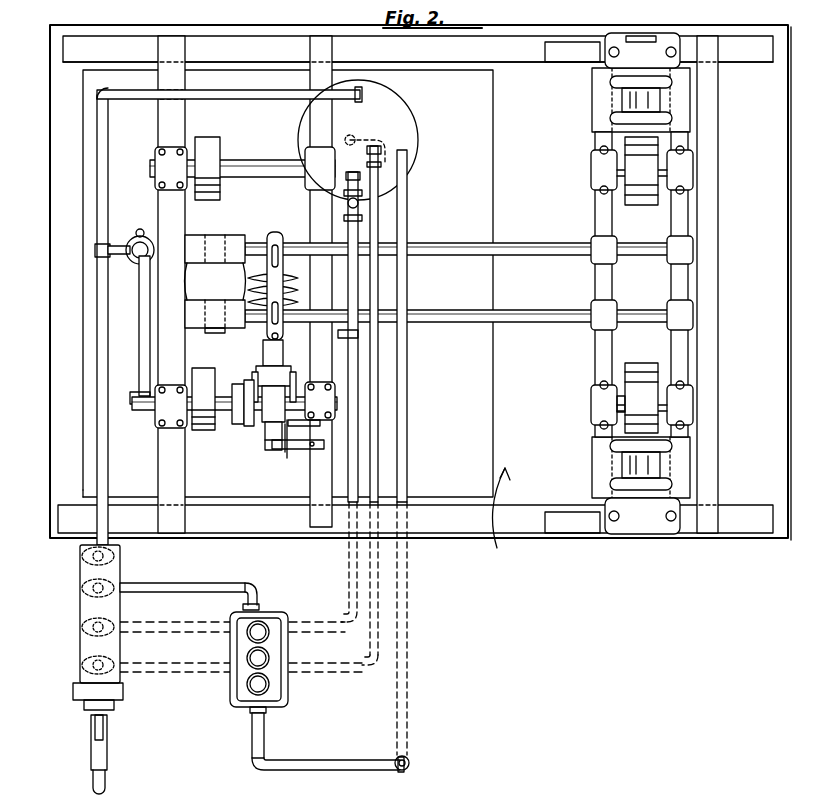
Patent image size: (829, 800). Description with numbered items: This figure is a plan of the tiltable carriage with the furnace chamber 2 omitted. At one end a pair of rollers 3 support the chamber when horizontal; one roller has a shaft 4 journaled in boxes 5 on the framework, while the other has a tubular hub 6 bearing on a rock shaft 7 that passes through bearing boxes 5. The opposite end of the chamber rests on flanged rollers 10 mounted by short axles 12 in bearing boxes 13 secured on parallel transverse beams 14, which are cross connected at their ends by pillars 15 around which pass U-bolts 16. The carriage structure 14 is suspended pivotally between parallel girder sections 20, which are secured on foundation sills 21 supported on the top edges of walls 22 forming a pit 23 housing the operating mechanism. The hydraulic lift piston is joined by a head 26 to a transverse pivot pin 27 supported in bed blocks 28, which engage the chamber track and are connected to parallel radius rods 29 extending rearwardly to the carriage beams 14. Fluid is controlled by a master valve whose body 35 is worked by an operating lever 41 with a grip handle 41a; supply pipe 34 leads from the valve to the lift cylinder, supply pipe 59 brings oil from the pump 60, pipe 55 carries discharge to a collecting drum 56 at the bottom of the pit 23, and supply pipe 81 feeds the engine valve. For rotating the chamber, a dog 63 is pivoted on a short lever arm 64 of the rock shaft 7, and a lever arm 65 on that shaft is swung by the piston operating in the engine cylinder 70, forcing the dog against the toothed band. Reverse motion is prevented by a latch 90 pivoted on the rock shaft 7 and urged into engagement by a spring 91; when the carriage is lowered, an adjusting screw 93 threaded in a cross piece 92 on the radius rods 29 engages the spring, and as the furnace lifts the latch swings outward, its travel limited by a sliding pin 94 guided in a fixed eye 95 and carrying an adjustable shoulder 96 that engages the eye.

The furnace chamber 2 is at (486, 788).
The rollers 3 is at (208, 148).
The shaft 4 is at (242, 168).
The bearing boxes 5 is at (158, 166).
The tubular hub 6 is at (232, 414).
The rock shaft 7 is at (246, 412).
The flanged rollers 10 is at (640, 206).
The short axles 12 is at (620, 393).
The bearing boxes 13 is at (597, 166).
The transverse beams 14 is at (600, 350).
The pillars 15 is at (692, 108).
The U-bolts 16 is at (612, 82).
The girder sections 20 is at (565, 58).
The foundation sills 21 is at (498, 72).
The walls 22 is at (466, 68).
The pit 23 is at (507, 517).
The head 26 is at (238, 283).
The transverse pivot pin 27 is at (220, 236).
The bed blocks 28 is at (195, 310).
The radius rods 29 is at (508, 258).
The supply pipe 34 is at (300, 322).
The valve body 35 is at (86, 655).
The operating lever 41 is at (108, 758).
The grip handle 41a is at (106, 788).
The pipe 55 is at (378, 418).
The collecting drum 56 is at (410, 130).
The supply pipe 59 is at (150, 586).
The pump 60 is at (288, 702).
The dog 63 is at (278, 360).
The lever arm 64 is at (258, 380).
The lever arm 65 is at (139, 362).
The engine cylinder 70 is at (137, 238).
The supply pipe 81 is at (98, 298).
The latch 90 is at (264, 428).
The spring 91 is at (278, 432).
The cross piece 92 is at (278, 236).
The adjusting screw 93 is at (268, 338).
The sliding pin 94 is at (290, 456).
The fixed eye 95 is at (320, 444).
The adjustable shoulder 96 is at (320, 425).